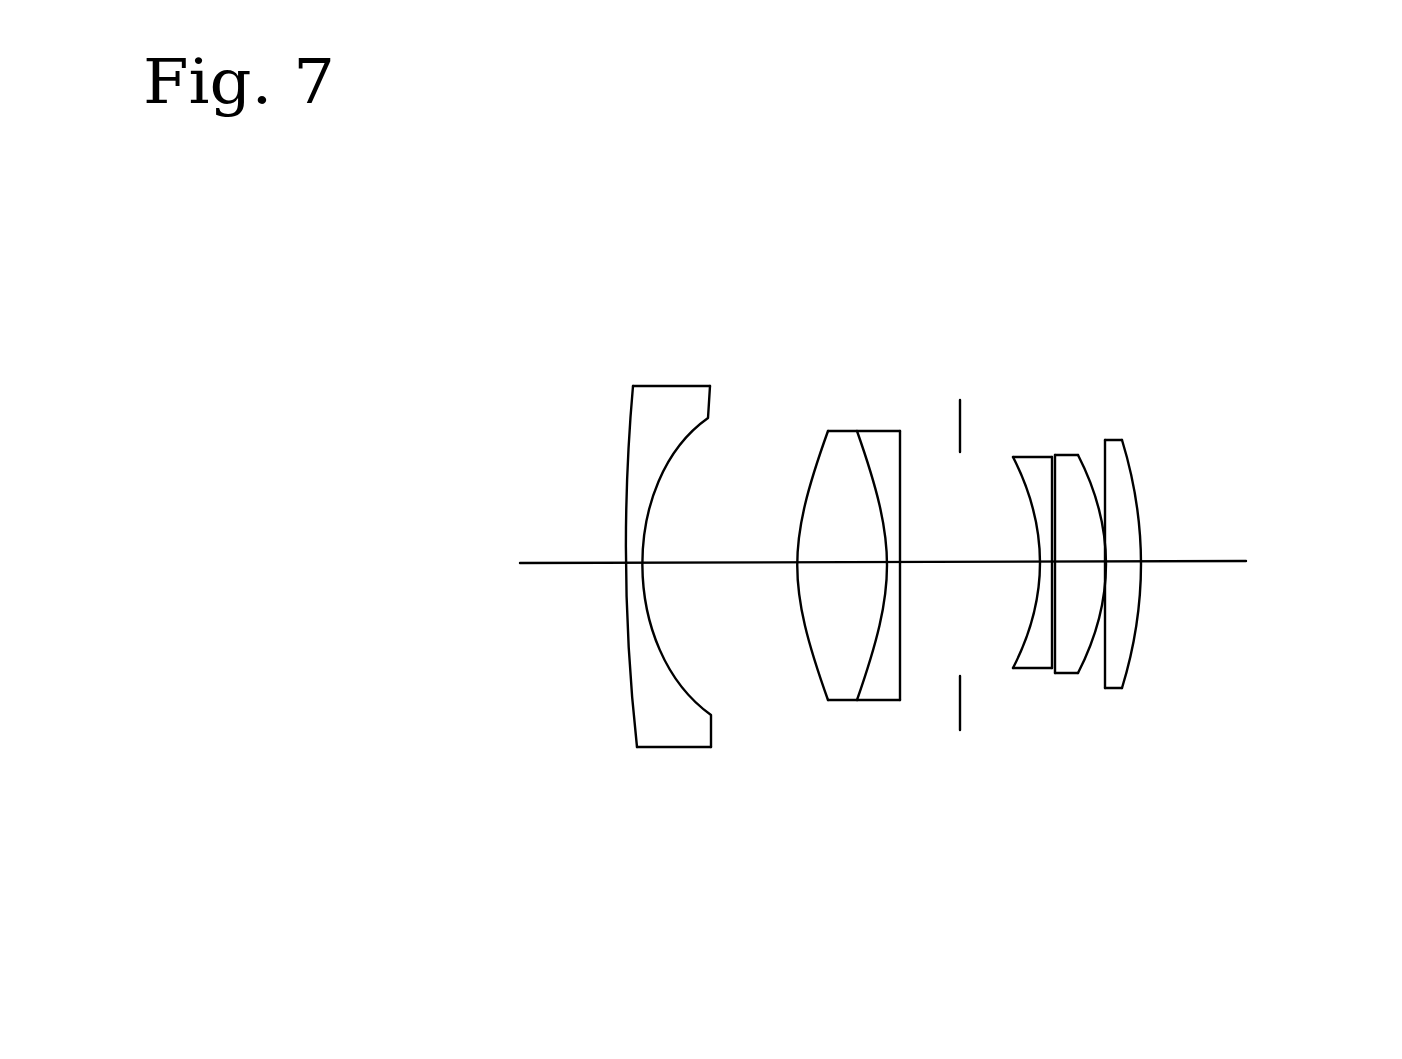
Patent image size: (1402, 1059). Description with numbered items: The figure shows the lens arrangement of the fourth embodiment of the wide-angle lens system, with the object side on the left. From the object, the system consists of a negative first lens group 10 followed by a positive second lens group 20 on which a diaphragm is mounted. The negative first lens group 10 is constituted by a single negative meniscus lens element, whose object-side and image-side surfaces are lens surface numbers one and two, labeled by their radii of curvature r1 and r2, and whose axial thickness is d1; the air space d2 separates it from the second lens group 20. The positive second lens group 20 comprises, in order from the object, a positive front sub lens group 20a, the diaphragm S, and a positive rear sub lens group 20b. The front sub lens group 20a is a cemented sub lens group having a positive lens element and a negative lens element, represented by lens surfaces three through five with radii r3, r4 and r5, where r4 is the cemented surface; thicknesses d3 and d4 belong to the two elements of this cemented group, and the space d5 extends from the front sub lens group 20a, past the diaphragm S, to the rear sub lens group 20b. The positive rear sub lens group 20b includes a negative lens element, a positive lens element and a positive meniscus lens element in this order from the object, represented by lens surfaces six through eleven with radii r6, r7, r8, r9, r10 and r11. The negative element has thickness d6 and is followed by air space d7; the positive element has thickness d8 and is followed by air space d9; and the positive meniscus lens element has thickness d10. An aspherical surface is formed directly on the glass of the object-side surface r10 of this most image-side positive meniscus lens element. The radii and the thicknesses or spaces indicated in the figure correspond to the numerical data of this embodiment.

The negative first lens group 10 is at (720, 368).
The positive second lens group 20 is at (1112, 305).
The positive 2a sub lens group 20a is at (917, 410).
The positive 2b sub lens group 20b is at (1191, 483).
The diaphragm S is at (960, 420).
The radius of curvature of lens surface No. 1 r1 is at (633, 386).
The radius of curvature of lens surface No. 2 r2 is at (710, 386).
The radius of curvature of lens surface No. 3 r3 is at (828, 431).
The radius of curvature of lens surface No. 4 r4 is at (857, 431).
The radius of curvature of lens surface No. 5 r5 is at (900, 431).
The radius of curvature of lens surface No. 6 r6 is at (1013, 457).
The radius of curvature of lens surface No. 7 r7 is at (1050, 457).
The radius of curvature of lens surface No. 8 r8 is at (1058, 455).
The radius of curvature of lens surface No. 9 r9 is at (1080, 455).
The radius of curvature of lens surface No. 10 r10 is at (1105, 440).
The radius of curvature of lens surface No. 11 r11 is at (1122, 440).
The lens thickness between surfaces 1 and 2 d1 is at (625, 595).
The space between surfaces 2 and 3 d2 is at (728, 563).
The lens thickness between surfaces 3 and 4 d3 is at (842, 562).
The lens thickness between surfaces 4 and 5 d4 is at (895, 562).
The space between surfaces 5 and 6 d5 is at (943, 562).
The lens thickness between surfaces 6 and 7 d6 is at (1040, 562).
The space between surfaces 7 and 8 d7 is at (1058, 562).
The lens thickness between surfaces 8 and 9 d8 is at (1087, 562).
The space between surfaces 9 and 10 d9 is at (1108, 562).
The lens thickness between surfaces 10 and 11 d10 is at (1125, 563).